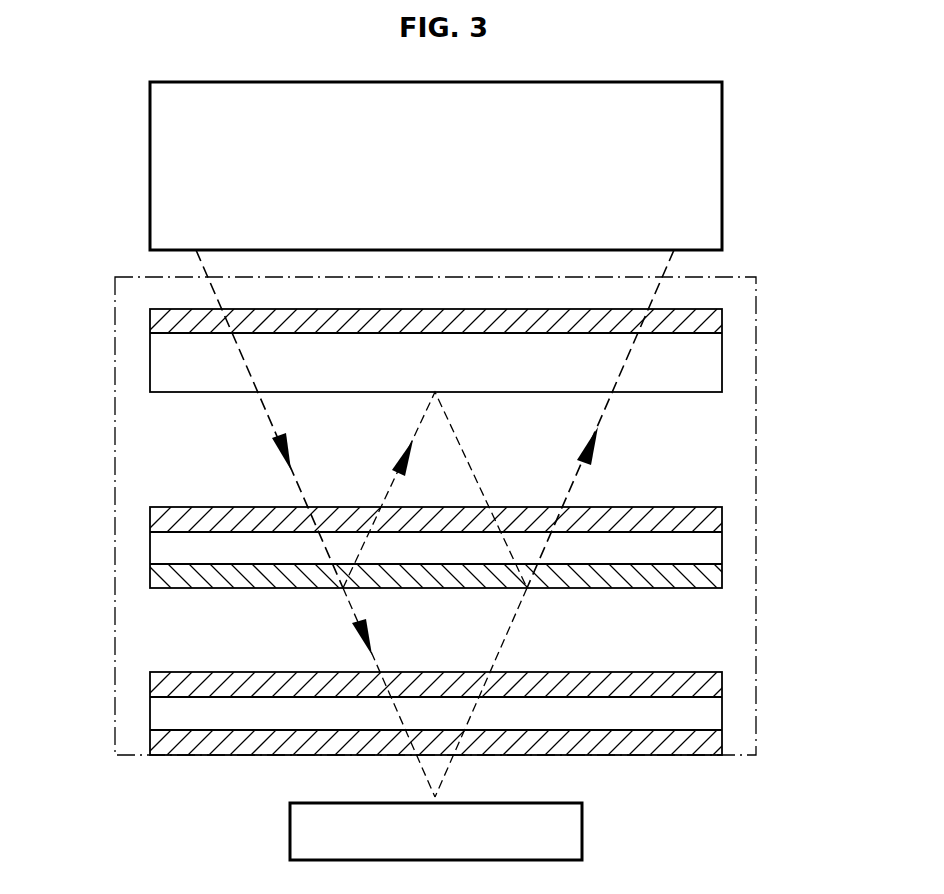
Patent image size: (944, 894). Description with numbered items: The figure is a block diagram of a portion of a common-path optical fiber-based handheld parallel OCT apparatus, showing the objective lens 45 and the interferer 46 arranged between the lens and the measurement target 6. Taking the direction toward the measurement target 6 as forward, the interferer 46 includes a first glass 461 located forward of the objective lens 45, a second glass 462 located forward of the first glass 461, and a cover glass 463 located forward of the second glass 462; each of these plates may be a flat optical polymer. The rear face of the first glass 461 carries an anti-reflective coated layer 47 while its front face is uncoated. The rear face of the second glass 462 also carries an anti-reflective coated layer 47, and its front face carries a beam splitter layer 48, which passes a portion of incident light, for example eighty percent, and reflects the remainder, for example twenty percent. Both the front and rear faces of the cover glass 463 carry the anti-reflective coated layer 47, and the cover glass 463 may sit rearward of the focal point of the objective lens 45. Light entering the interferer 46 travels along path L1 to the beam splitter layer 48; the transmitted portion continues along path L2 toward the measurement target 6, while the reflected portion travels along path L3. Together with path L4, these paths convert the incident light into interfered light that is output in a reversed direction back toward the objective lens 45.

The objective lens 45 is at (150, 166).
The interferer 46 is at (115, 277).
The first glass 461 is at (153, 365).
The second glass 462 is at (158, 548).
The beam splitter layer 48 is at (152, 578).
The cover glass 463 is at (155, 712).
The anti-reflective coated layer 47 is at (707, 325).
The measurement target 6 is at (290, 830).
The path L1 is at (272, 442).
The path L2 is at (354, 637).
The path L3 is at (403, 455).
The path L4 is at (582, 452).